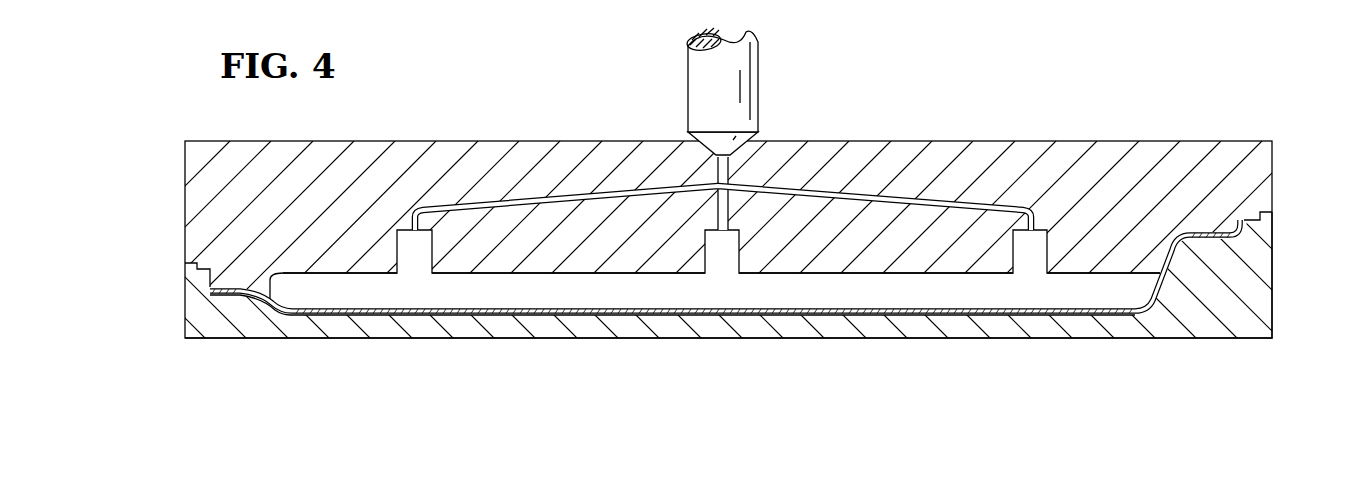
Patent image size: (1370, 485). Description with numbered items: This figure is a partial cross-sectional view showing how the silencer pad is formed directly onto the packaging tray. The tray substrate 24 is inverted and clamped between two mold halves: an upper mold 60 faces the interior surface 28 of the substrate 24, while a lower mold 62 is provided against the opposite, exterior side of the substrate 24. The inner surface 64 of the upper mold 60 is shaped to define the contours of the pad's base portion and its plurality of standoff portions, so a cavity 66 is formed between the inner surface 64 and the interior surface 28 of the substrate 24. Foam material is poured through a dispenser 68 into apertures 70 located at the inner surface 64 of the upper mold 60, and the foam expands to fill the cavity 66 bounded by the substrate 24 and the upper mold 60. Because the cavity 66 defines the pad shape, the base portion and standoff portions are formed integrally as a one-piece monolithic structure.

The substrate 24 is at (1115, 313).
The interior surface 28 is at (878, 310).
The upper mold 60 is at (1238, 153).
The lower mold 62 is at (1258, 293).
The inner surface 64 is at (1090, 274).
The cavity 66 is at (570, 292).
The dispenser 68 is at (758, 55).
The apertures 70 is at (437, 212).